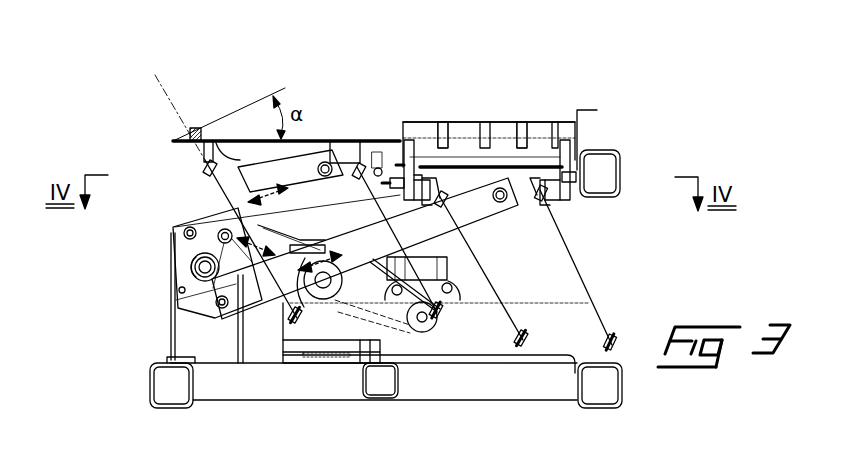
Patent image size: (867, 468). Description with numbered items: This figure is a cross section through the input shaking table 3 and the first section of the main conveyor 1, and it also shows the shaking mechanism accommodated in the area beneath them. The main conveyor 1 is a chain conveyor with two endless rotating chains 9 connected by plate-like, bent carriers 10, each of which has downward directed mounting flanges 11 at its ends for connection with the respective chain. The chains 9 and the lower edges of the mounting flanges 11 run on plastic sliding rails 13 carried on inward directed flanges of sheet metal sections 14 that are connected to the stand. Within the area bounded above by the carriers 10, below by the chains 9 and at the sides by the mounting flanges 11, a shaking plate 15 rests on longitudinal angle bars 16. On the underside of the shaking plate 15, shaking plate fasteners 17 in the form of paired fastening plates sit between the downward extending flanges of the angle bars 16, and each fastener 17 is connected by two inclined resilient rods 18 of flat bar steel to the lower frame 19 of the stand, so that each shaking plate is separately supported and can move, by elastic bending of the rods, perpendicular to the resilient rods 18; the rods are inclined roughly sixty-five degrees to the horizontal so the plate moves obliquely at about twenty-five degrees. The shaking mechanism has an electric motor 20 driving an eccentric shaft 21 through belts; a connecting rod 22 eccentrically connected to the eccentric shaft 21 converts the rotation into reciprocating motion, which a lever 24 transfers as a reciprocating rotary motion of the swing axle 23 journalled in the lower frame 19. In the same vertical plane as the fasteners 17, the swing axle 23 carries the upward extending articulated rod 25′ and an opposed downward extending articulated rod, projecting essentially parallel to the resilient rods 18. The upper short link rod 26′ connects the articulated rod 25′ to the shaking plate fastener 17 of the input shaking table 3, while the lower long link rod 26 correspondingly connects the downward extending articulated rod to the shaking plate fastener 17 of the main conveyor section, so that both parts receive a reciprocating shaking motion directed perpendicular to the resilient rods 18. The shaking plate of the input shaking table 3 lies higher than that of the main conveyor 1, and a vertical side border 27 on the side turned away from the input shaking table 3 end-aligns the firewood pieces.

The main conveyor 1 is at (502, 66).
The input shaking table 3 is at (291, 66).
The chains 9 is at (420, 195).
The carriers 10 is at (470, 124).
The mounting flanges 11 is at (412, 186).
The plastic sliding rails 13 is at (418, 185).
The sheet metal sections 14 is at (405, 181).
The shaking plate 15 is at (265, 140).
The longitudinal angle bars 16 is at (195, 163).
The shaking plate fasteners 17 is at (240, 156).
The resilient rods 18 is at (584, 270).
The lower frame 19 is at (485, 378).
The electric motor 20 is at (395, 305).
The eccentric shaft 21 is at (324, 285).
The connecting rod 22 is at (263, 228).
The swing axle 23 is at (198, 265).
The lever 24 is at (221, 233).
The upward extending articulated rod 25′ is at (183, 250).
The swivel arm 26 is at (256, 290).
The upper short link rod 26′ is at (299, 178).
The side border 27 is at (568, 130).